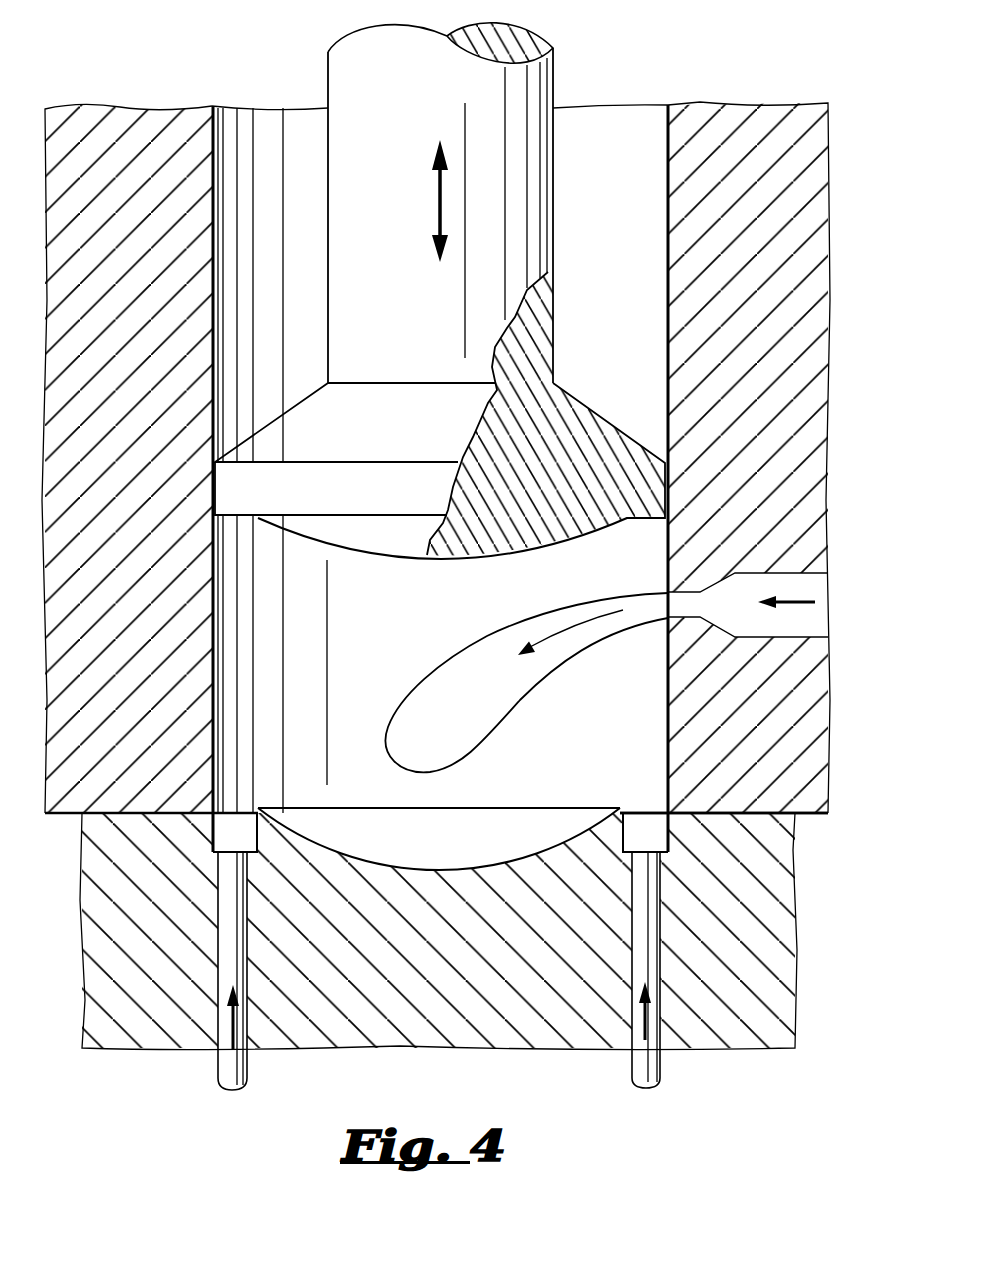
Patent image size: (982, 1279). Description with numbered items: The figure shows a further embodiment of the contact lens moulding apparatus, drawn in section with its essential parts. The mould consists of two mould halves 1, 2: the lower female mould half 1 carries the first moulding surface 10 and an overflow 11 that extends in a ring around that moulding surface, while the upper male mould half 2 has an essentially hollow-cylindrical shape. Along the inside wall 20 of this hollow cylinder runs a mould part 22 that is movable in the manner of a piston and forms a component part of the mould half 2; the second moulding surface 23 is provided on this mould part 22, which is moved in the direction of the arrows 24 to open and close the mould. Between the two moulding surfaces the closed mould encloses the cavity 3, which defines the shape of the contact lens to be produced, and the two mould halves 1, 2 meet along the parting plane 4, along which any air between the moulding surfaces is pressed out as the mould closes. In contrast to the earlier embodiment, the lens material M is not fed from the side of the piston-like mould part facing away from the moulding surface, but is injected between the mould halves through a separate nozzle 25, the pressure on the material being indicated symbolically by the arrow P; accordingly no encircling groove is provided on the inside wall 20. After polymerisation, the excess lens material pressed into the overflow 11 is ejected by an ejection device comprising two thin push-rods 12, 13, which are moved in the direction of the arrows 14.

The mould half 1 is at (818, 930).
The mould half 2 is at (852, 388).
The cavity 3 is at (497, 823).
The parting plane 4 is at (790, 825).
The first moulding surface 10 is at (347, 855).
The overflow 11 is at (645, 828).
The push-rod 12 is at (225, 1068).
The push-rod 13 is at (655, 1070).
The arrows 14 is at (243, 1022).
The inside wall 20 is at (658, 262).
The mould part 22 is at (355, 62).
The second moulding surface 23 is at (438, 560).
The arrows 24 is at (438, 190).
The nozzle 25 is at (698, 588).
The lens material M is at (408, 712).
The arrows P is at (802, 605).